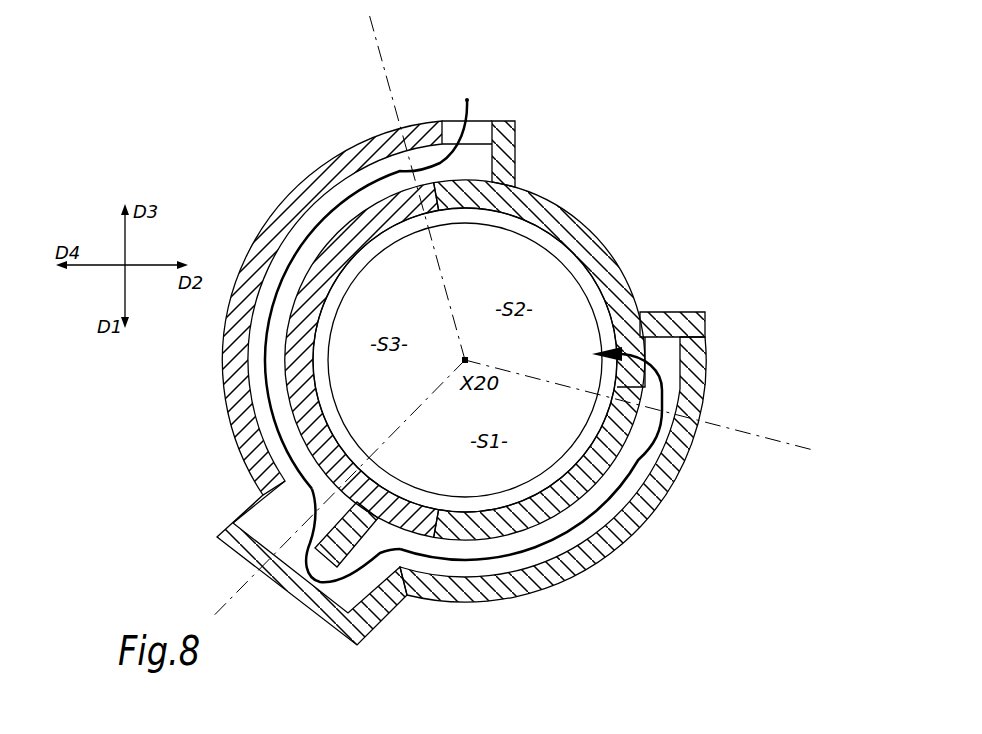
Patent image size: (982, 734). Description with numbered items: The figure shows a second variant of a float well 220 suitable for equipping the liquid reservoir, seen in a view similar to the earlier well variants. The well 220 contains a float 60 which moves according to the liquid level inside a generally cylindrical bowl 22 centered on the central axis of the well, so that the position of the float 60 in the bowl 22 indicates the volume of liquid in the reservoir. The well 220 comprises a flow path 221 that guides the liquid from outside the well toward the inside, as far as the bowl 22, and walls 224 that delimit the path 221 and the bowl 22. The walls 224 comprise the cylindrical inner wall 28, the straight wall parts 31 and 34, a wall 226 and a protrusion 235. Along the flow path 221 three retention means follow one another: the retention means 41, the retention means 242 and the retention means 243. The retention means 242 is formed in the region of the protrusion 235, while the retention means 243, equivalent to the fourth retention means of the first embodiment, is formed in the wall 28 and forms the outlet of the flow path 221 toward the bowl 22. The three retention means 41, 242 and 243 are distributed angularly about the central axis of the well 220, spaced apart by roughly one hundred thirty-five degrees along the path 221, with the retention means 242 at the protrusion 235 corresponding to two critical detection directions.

The bowl 22 is at (583, 250).
The cylindrical inner wall 28 is at (517, 267).
The straight part 31 is at (505, 150).
The straight part 34 is at (672, 312).
The retention means 41 is at (471, 100).
The float 60 is at (572, 263).
The float well 220 is at (195, 162).
The flow path 221 is at (593, 364).
The walls 224 is at (648, 132).
The wall 226 is at (231, 407).
The protrusion 235 is at (220, 548).
The retention means 242 is at (300, 518).
The retention means 243 is at (637, 352).